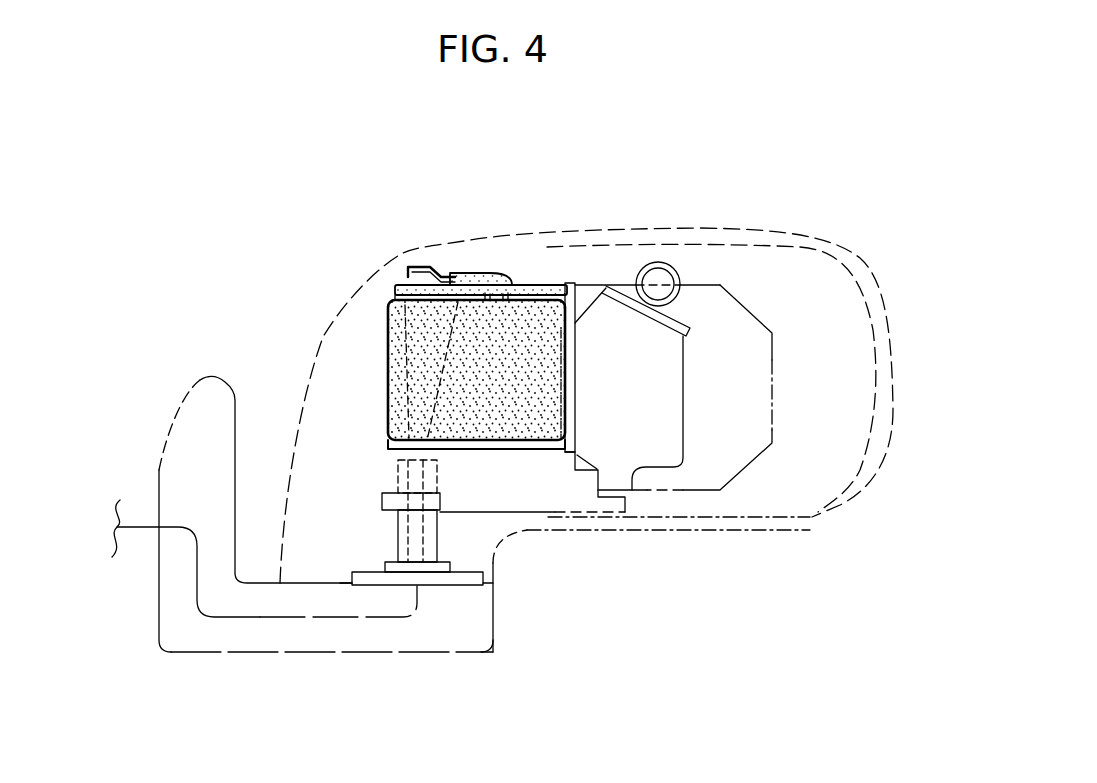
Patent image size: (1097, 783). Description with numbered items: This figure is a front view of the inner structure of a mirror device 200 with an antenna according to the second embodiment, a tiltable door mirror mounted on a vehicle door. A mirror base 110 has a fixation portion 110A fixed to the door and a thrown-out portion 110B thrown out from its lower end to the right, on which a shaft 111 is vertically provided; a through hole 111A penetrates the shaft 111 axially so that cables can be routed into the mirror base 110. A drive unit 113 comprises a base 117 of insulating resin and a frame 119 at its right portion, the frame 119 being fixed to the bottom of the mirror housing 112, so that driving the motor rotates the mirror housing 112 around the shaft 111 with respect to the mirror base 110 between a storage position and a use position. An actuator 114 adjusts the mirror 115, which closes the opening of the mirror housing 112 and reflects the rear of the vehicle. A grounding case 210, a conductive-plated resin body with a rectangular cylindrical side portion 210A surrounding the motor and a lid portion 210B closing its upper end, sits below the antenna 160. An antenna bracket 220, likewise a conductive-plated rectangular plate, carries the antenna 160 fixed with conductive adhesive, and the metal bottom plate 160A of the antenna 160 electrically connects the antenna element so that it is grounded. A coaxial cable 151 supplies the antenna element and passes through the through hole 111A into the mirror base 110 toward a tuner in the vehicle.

The mirror device with antenna 200 is at (682, 188).
The mirror housing 112 is at (343, 305).
The mirror base 110 is at (190, 655).
The fixation portion 110A is at (160, 470).
The thrown-out portion 110B is at (393, 652).
The shaft 111 is at (440, 537).
The through hole 111A is at (417, 543).
The drive unit 113 is at (365, 393).
The grounding case 210 is at (378, 352).
The side portion 210A is at (417, 412).
The lid portion 210B is at (397, 285).
The antenna bracket 220 is at (405, 300).
The antenna 160 is at (470, 283).
The bottom plate 160A is at (512, 278).
The coaxial cable 151 is at (441, 272).
The actuator 114 is at (761, 300).
The base 117 is at (558, 495).
The frame 119 is at (660, 430).
The mirror 115 is at (803, 495).